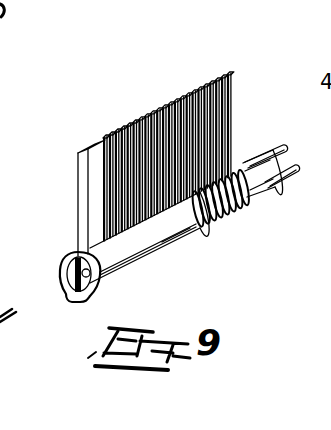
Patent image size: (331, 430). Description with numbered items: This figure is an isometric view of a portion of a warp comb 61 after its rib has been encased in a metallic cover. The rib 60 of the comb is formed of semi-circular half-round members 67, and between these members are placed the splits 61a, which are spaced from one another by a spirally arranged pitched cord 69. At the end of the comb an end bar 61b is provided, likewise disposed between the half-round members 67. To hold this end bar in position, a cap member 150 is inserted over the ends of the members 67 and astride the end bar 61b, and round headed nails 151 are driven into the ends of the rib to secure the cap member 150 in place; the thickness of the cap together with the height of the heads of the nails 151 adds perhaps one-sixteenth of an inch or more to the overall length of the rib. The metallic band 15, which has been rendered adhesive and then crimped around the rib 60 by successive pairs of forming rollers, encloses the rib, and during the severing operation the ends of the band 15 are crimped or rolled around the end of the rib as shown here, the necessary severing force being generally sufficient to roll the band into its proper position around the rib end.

The band 15 is at (163, 244).
The rib 60 is at (232, 215).
The warp comb 61 is at (143, 167).
The splits 61a is at (229, 76).
The end bar 61b is at (77, 156).
The semi-circular half-round members 67 is at (259, 161).
The spirally arranged pitched cord 69 is at (252, 197).
The cap member 150 is at (64, 287).
The round headed nails 151 is at (65, 253).